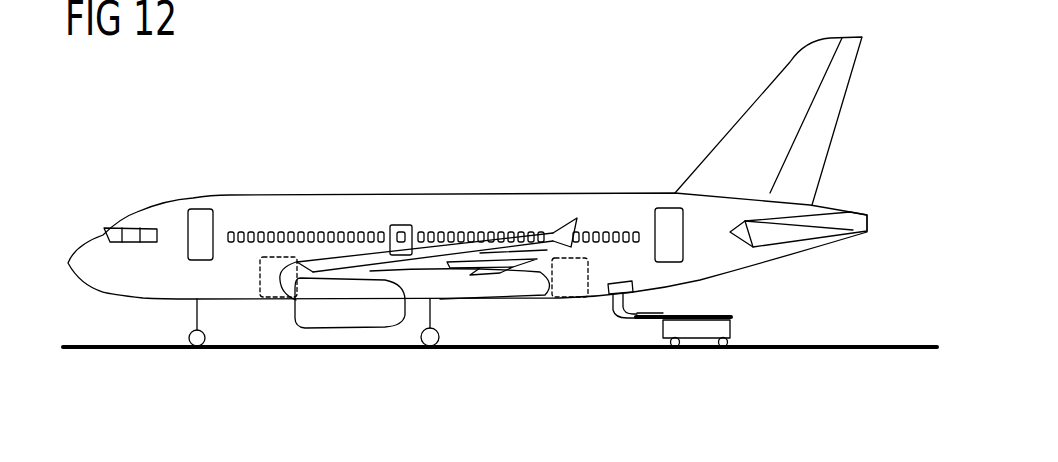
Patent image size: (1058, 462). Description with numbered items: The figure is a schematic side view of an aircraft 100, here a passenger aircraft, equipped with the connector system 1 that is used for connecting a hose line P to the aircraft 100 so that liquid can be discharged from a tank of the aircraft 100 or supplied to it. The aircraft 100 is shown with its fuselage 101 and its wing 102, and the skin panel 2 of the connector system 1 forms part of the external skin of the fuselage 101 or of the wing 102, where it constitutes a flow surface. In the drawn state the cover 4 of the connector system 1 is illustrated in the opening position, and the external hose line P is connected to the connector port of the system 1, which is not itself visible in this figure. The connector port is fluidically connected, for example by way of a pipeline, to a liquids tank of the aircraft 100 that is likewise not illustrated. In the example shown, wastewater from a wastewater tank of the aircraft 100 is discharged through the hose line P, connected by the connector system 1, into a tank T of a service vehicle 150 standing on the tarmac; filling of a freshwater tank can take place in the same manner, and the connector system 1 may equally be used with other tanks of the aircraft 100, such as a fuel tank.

The aircraft 100 is at (326, 101).
The fuselage 101 is at (433, 208).
The wing 102 is at (440, 263).
The connector system 1 is at (619, 266).
The skin panel 2 is at (636, 291).
The cover 4 is at (611, 300).
The service vehicle 150 is at (752, 322).
The hose line P is at (637, 319).
The tank T is at (695, 329).